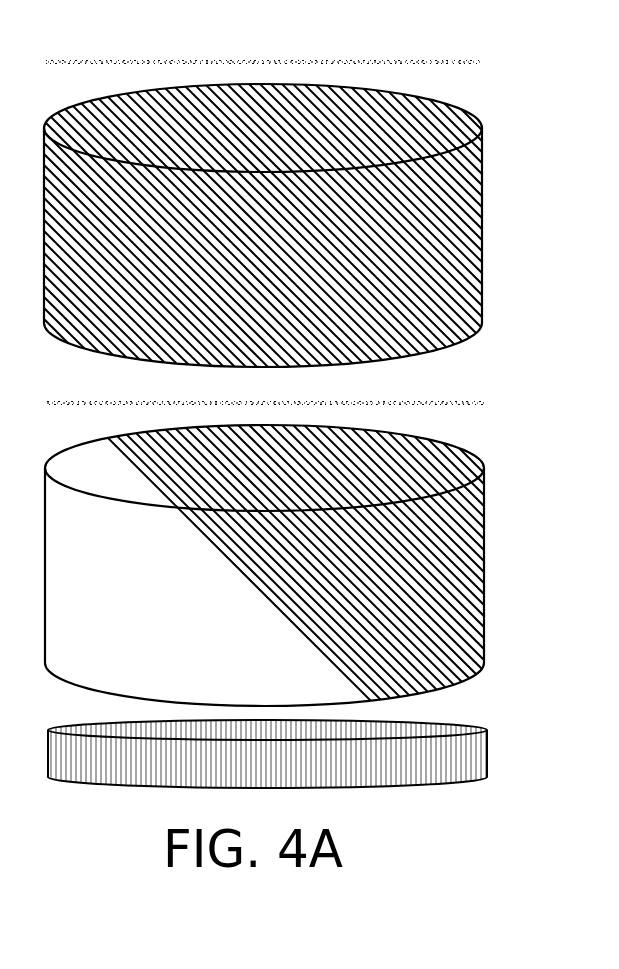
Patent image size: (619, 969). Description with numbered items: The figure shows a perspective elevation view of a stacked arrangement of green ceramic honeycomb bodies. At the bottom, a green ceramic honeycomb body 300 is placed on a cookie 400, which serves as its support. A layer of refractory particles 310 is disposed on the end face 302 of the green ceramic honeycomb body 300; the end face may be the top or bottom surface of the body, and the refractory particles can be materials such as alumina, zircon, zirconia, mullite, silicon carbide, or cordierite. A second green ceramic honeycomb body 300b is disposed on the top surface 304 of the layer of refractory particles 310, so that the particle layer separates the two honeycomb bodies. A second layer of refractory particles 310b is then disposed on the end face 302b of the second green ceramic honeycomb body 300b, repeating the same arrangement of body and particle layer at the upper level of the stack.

The second layer of refractory particles 310b is at (480, 62).
The end face of the second green ceramic honeycomb body 302b is at (463, 130).
The second green ceramic honeycomb body 300b is at (309, 484).
The top surface of the layer of refractory particles 304 is at (452, 402).
The layer of refractory particles 310 is at (485, 403).
The end face 302 is at (480, 463).
The green ceramic honeycomb body 300 is at (309, 484).
The cookie 400 is at (490, 757).